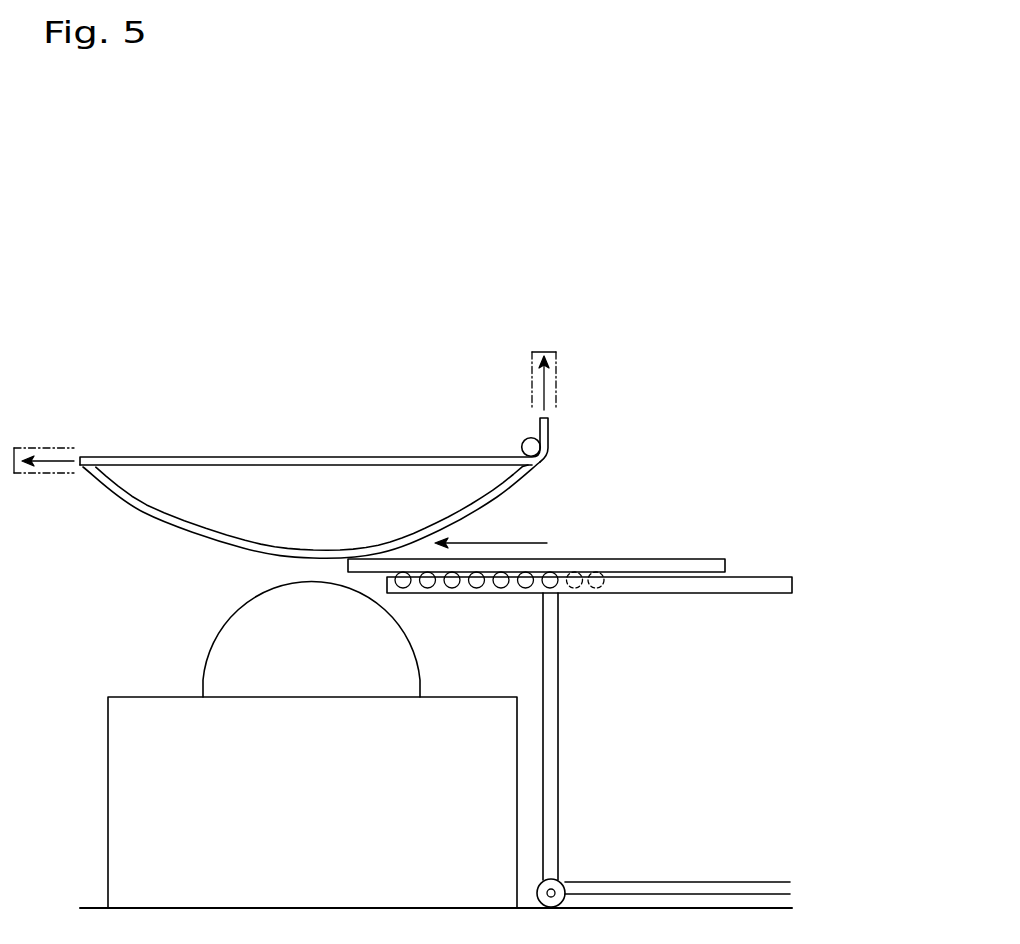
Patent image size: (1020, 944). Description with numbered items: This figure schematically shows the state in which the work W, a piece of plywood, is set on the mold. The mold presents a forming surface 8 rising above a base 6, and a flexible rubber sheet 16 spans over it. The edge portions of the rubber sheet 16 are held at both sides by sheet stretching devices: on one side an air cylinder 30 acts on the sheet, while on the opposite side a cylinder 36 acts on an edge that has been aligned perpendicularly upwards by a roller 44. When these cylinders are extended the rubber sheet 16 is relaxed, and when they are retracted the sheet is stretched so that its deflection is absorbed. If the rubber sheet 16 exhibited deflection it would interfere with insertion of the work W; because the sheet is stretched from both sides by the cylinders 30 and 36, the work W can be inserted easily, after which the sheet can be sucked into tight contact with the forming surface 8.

The base block 6 is at (418, 662).
The forming surface 8 is at (208, 645).
The rubber sheet 16 is at (343, 458).
The air cylinder 30 is at (50, 448).
The cylinder 36 is at (557, 382).
The roller 44 is at (527, 447).
The work W is at (623, 559).